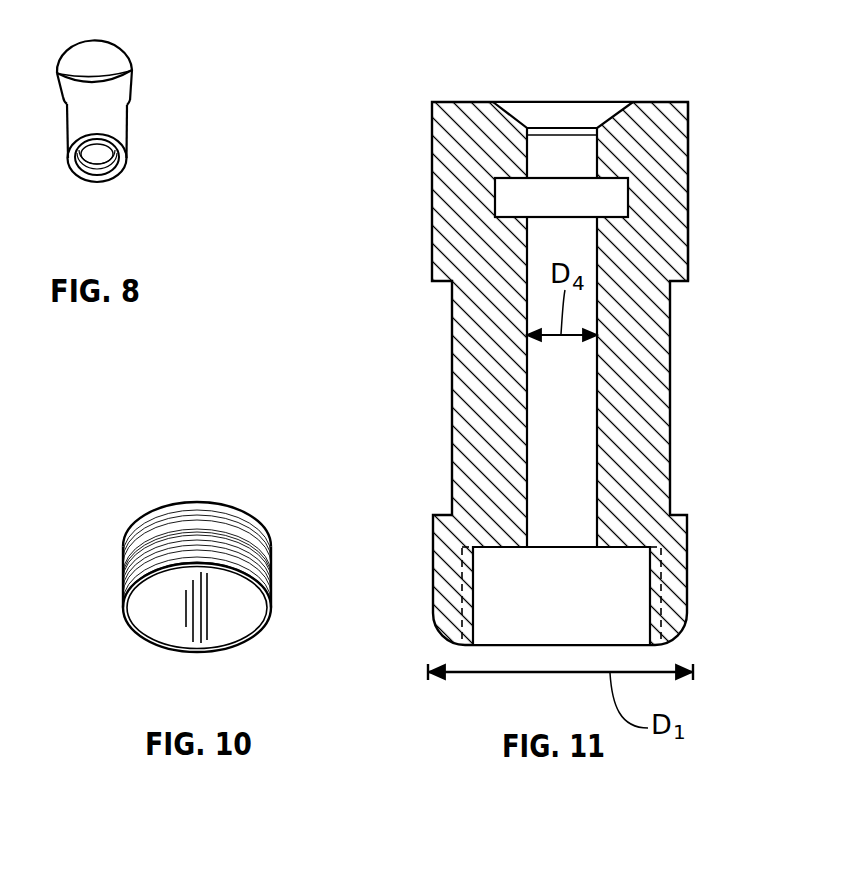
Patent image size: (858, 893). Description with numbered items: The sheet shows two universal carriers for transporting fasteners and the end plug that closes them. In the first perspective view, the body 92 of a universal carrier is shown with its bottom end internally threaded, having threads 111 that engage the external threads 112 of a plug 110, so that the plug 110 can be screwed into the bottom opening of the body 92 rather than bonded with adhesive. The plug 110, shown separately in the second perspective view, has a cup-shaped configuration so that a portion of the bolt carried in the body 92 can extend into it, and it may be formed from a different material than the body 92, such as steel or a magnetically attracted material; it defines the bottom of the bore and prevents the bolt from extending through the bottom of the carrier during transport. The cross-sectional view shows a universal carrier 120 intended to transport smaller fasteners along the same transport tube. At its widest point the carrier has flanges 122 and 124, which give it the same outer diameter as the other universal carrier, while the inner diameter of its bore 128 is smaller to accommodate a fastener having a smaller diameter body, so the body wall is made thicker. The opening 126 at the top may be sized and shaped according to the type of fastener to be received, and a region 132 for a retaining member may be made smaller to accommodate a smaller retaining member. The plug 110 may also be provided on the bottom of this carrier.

In FIG. 8, the body 92 is at (128, 127).
In FIG. 8, the threads 111 is at (97, 184).
In FIG. 10, the plug 110 is at (168, 484).
In FIG. 10, the external threads 112 is at (270, 562).
In FIG. 11, the universal carrier 120 is at (699, 339).
In FIG. 11, the flange 122 is at (640, 578).
In FIG. 11, the flange 124 is at (689, 175).
In FIG. 11, the opening 126 is at (519, 92).
In FIG. 11, the bore 128 is at (590, 461).
In FIG. 11, the region for a retaining member 132 is at (597, 193).